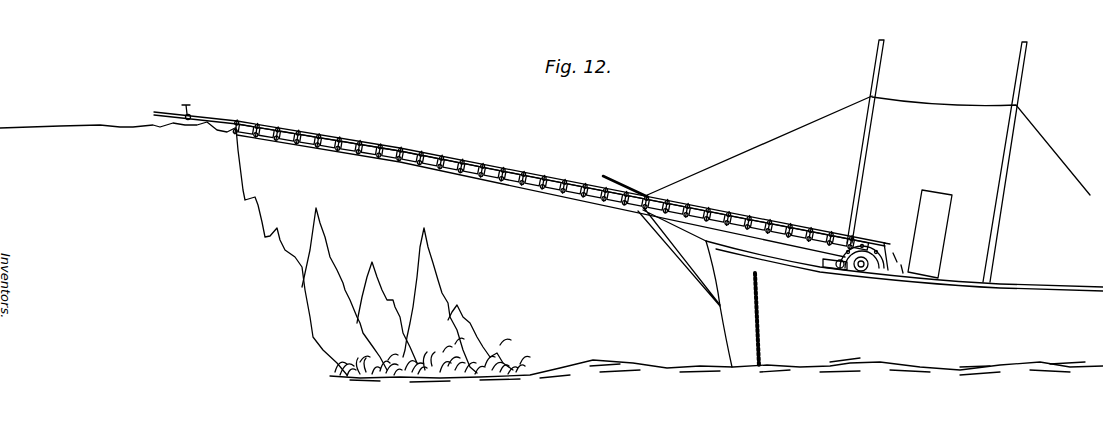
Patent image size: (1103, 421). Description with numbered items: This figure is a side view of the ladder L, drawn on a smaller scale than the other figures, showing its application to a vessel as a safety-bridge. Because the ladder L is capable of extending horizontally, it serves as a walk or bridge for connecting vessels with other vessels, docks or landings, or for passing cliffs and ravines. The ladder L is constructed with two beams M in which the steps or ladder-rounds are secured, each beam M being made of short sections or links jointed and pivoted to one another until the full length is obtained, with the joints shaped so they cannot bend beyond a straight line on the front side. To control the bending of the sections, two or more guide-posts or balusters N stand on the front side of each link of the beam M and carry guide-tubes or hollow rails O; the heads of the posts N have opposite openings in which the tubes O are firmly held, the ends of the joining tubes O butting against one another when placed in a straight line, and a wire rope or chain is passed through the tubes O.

The ladder L is at (519, 177).
The beams M is at (551, 186).
The guide-posts or balusters N is at (541, 196).
The guide-tubes or hollow rails O is at (519, 180).